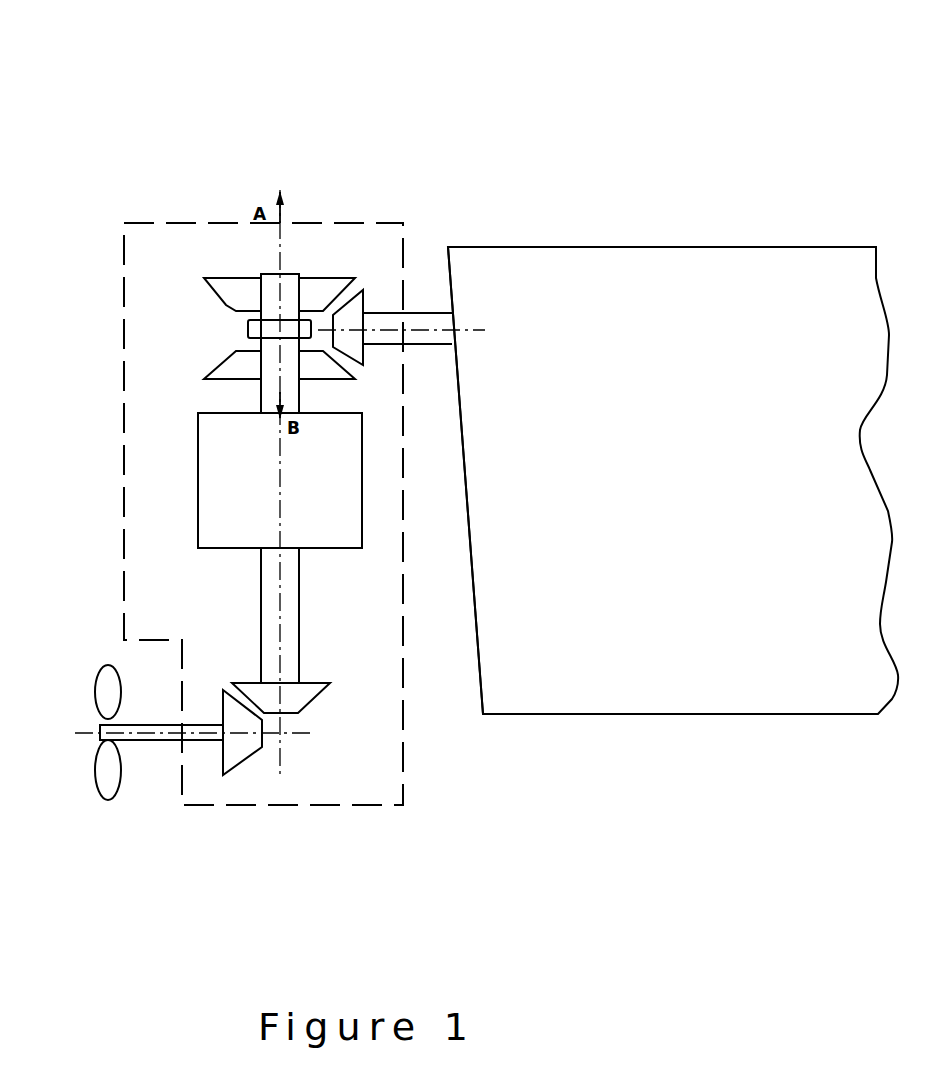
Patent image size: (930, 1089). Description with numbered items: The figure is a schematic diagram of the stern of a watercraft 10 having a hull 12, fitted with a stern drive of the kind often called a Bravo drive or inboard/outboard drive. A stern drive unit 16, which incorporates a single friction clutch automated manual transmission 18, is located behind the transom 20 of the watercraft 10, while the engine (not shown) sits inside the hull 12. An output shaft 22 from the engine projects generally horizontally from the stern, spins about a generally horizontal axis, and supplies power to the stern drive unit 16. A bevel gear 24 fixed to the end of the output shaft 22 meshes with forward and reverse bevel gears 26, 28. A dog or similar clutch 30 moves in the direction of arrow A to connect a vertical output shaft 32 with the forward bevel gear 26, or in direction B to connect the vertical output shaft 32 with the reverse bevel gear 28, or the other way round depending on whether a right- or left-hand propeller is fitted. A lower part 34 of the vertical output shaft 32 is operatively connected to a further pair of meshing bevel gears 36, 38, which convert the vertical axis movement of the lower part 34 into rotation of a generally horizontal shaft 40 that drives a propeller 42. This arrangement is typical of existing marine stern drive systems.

The watercraft 10 is at (678, 185).
The hull 12 is at (673, 480).
The stern drive unit 16 is at (187, 223).
The single friction clutch automated manual transmission 18 is at (280, 480).
The transom 20 is at (463, 410).
The output shaft 22 is at (407, 313).
The bevel gear 24 is at (347, 300).
The forward bevel gear 26 is at (213, 293).
The reverse bevel gear 28 is at (213, 367).
The dog clutch 30 is at (245, 330).
The vertical output shaft 32 is at (253, 400).
The lower part of the vertical output shaft 34 is at (262, 610).
The bevel gear 36 is at (298, 717).
The bevel gear 38 is at (243, 742).
The horizontal shaft 40 is at (163, 740).
The propeller 42 is at (108, 803).